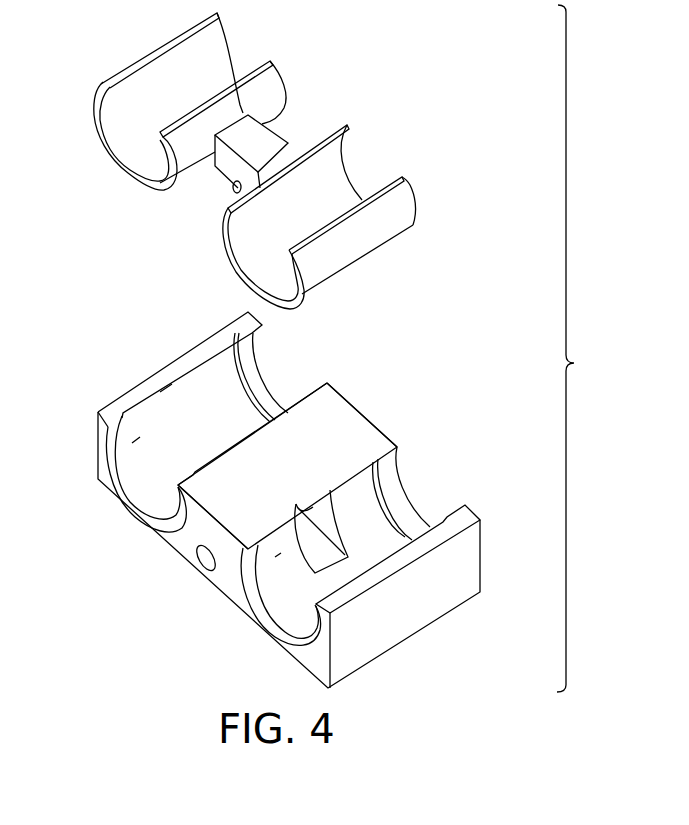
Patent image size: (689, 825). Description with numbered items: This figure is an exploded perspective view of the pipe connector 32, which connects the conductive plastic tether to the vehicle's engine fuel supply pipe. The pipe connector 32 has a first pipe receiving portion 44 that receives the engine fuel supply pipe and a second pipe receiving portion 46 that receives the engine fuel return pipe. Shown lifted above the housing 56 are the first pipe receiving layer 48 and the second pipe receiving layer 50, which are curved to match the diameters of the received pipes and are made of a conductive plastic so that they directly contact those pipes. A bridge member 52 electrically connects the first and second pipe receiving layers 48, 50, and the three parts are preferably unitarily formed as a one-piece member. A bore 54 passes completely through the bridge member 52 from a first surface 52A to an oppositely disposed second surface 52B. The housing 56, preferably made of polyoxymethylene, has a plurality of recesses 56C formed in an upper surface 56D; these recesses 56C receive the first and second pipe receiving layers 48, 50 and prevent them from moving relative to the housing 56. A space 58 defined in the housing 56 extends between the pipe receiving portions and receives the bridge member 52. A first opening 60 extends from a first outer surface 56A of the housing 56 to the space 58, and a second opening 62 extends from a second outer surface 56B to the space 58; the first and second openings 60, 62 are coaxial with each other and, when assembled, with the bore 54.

The pipe connector 32 is at (582, 348).
The first pipe receiving portion 44 is at (105, 468).
The second pipe receiving portion 46 is at (256, 617).
The first pipe receiving layer 48 is at (122, 119).
The second pipe receiving layer 50 is at (260, 247).
The bridge member 52 is at (250, 138).
The first surface 52A is at (222, 168).
The second surface 52B is at (292, 135).
The bore 54 is at (225, 190).
The housing 56 is at (373, 412).
The first outer surface 56A is at (190, 535).
The second outer surface 56B is at (352, 400).
The recesses 56C is at (178, 366).
The upper surface 56D is at (250, 475).
The space 58 is at (300, 545).
The first opening 60 is at (203, 568).
The second opening 62 is at (315, 510).